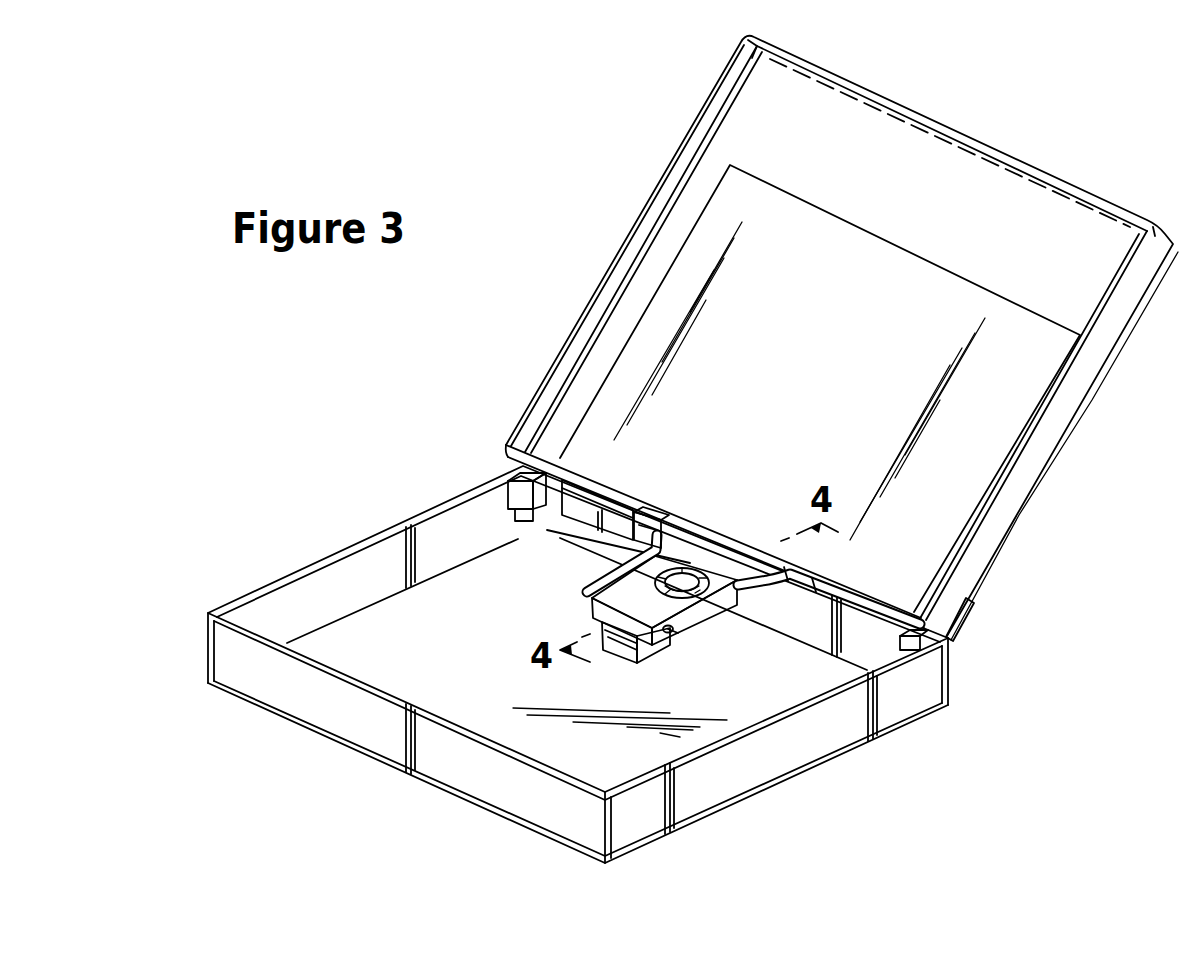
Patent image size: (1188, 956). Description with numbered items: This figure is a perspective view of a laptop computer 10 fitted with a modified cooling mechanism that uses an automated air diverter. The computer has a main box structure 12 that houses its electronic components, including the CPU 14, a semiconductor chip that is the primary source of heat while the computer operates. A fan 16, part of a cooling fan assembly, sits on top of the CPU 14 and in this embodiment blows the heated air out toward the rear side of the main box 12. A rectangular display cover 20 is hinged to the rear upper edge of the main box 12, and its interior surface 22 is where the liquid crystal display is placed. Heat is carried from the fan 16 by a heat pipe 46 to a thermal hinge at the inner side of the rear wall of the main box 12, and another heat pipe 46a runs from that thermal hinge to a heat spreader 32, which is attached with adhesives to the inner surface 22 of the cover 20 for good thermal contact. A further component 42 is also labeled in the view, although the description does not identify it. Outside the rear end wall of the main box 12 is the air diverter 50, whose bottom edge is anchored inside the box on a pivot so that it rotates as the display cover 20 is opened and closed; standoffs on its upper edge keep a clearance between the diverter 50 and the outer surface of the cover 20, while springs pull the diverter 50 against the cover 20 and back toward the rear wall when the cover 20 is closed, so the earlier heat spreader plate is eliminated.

The laptop computer 10 is at (1061, 754).
The main box structure 12 is at (353, 732).
The CPU 14 is at (625, 638).
The fan 16 is at (683, 583).
The cover 20 is at (1050, 178).
The interior surface 22 is at (757, 122).
The heat spreader 32 is at (832, 270).
The air duct 42 is at (807, 597).
The heat pipe 46 is at (590, 593).
The heat pipe 46a is at (650, 528).
The air diverter 50 is at (962, 640).